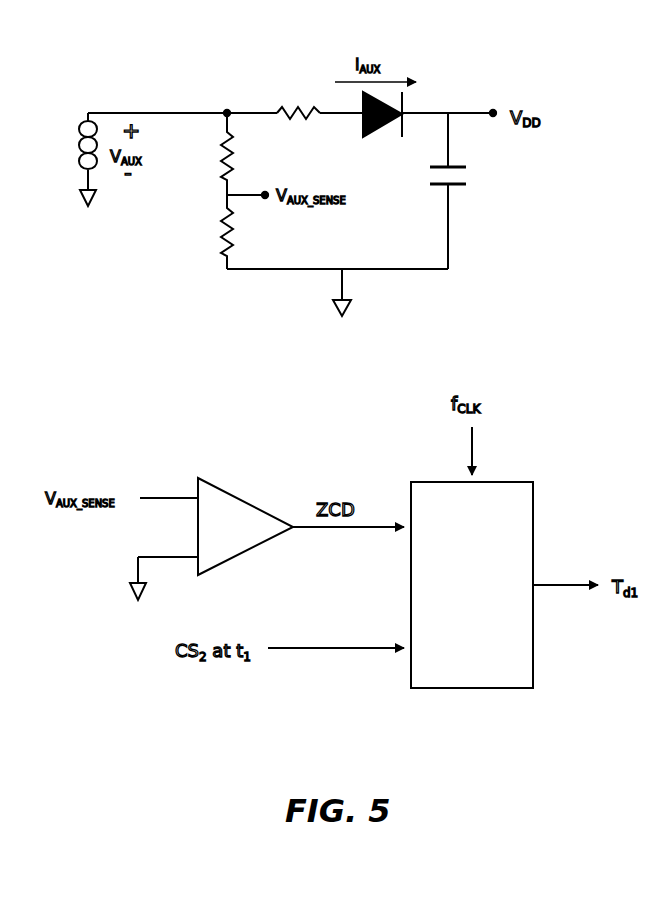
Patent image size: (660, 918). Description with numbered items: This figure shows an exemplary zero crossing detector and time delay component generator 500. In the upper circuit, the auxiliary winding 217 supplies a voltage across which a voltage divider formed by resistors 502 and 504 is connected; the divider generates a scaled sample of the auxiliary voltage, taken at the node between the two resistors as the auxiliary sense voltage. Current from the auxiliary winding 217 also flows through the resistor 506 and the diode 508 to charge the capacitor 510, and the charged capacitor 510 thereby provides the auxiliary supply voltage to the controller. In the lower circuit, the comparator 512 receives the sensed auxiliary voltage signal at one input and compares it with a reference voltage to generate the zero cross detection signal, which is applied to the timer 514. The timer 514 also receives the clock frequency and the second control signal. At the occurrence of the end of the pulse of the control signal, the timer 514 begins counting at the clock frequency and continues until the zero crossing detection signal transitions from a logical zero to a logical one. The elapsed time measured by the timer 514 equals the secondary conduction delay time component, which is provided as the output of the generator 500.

The auxiliary winding 217 is at (73, 173).
The zero crossing detector and time delay component generator 500 is at (574, 114).
The resistor 502 is at (236, 140).
The resistor 504 is at (236, 216).
The resistor 506 is at (294, 108).
The diode 508 is at (367, 136).
The capacitor 510 is at (462, 186).
The comparator 512 is at (245, 526).
The timer 514 is at (472, 585).